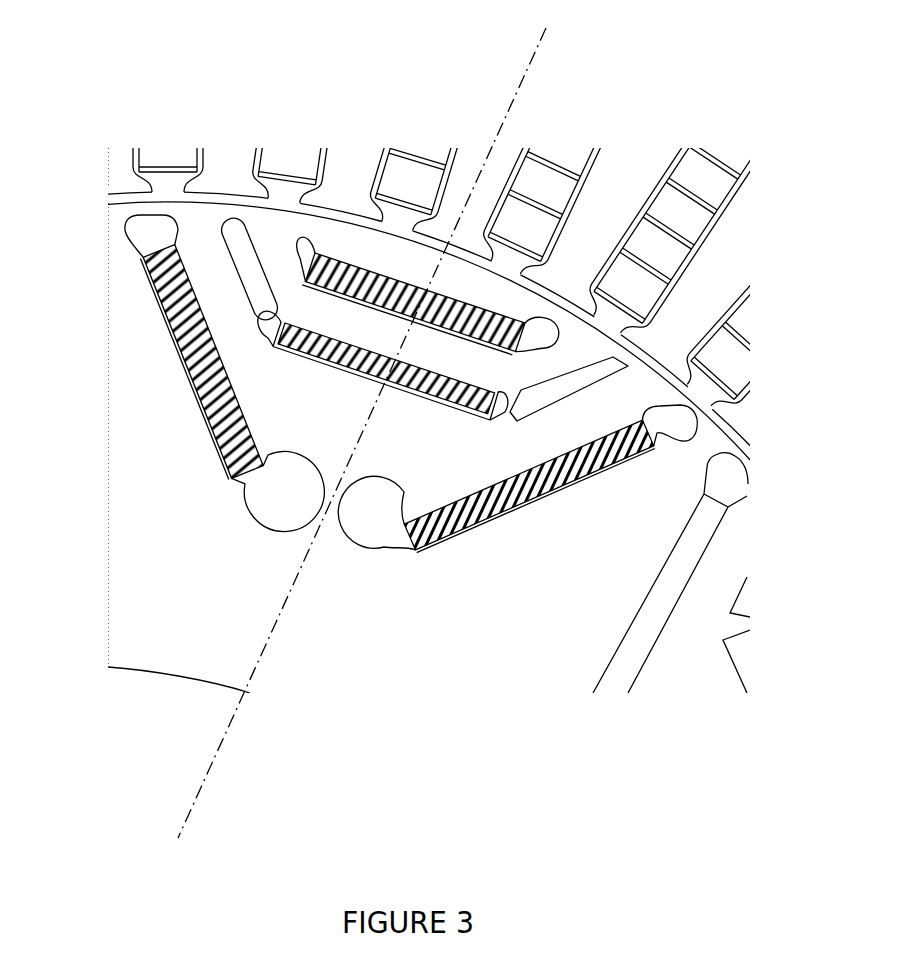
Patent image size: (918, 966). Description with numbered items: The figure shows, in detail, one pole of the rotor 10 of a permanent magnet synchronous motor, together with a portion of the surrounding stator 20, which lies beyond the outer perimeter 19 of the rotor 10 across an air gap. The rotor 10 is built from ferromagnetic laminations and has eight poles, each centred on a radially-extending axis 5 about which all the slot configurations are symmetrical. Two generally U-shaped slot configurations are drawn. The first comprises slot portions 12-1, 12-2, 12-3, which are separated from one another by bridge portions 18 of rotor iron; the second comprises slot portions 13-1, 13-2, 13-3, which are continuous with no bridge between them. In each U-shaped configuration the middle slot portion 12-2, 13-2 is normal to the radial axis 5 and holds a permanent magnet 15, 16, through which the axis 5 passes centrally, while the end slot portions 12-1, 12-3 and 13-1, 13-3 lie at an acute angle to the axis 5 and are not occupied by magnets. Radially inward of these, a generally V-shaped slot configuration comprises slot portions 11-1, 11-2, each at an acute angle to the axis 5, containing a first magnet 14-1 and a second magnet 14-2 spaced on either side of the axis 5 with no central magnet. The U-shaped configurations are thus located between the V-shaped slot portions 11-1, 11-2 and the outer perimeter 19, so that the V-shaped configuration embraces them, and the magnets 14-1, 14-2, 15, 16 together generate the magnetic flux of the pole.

The radial axis 5 is at (528, 63).
The rotor 10 is at (434, 724).
The stator 20 is at (739, 254).
The outer perimeter 19 is at (148, 203).
The slot portion 11-1 is at (187, 367).
The slot portion 11-2 is at (622, 459).
The slot portion 12-1 is at (237, 267).
The middle slot portion 12-2 is at (309, 357).
The slot portion 12-3 is at (587, 398).
The slot portion 13-1 is at (297, 248).
The middle slot portion 13-2 is at (369, 304).
The slot portion 13-3 is at (554, 346).
The first magnet 14-1 is at (200, 402).
The second magnet 14-2 is at (603, 457).
The permanent magnet 15 is at (433, 409).
The permanent magnet 16 is at (473, 339).
The bridge portion 18 is at (271, 335).